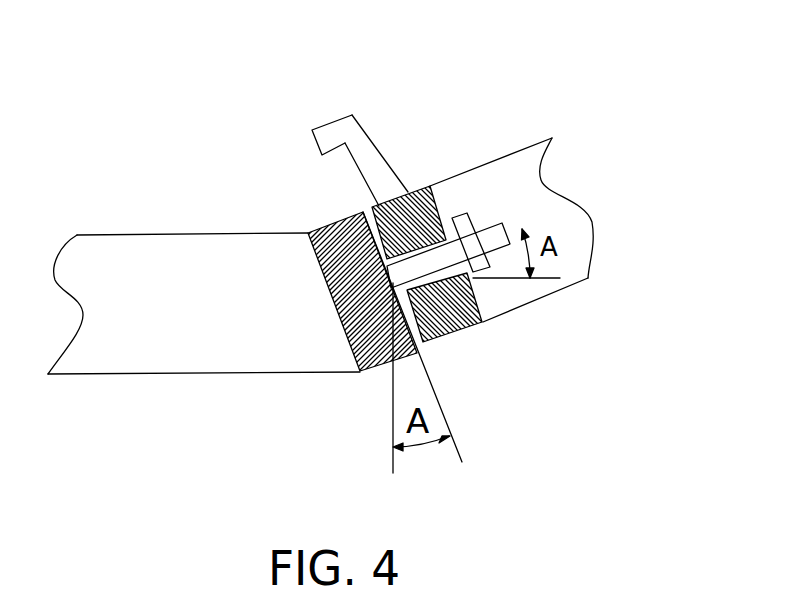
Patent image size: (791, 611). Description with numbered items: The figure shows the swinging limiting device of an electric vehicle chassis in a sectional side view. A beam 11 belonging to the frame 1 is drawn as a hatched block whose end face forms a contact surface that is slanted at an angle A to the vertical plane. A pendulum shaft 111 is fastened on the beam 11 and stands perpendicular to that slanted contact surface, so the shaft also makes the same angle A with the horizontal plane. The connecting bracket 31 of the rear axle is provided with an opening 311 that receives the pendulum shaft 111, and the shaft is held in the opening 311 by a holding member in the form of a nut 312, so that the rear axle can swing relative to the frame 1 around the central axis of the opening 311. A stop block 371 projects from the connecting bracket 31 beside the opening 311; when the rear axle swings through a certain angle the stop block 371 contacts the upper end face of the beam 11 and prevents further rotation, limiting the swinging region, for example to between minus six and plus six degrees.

The frame 1 is at (163, 350).
The beam 11 is at (322, 242).
The pendulum shaft 111 is at (498, 223).
The connecting bracket 31 is at (428, 184).
The opening 311 is at (472, 281).
The nut 312 is at (460, 216).
The stop block 371 is at (352, 115).